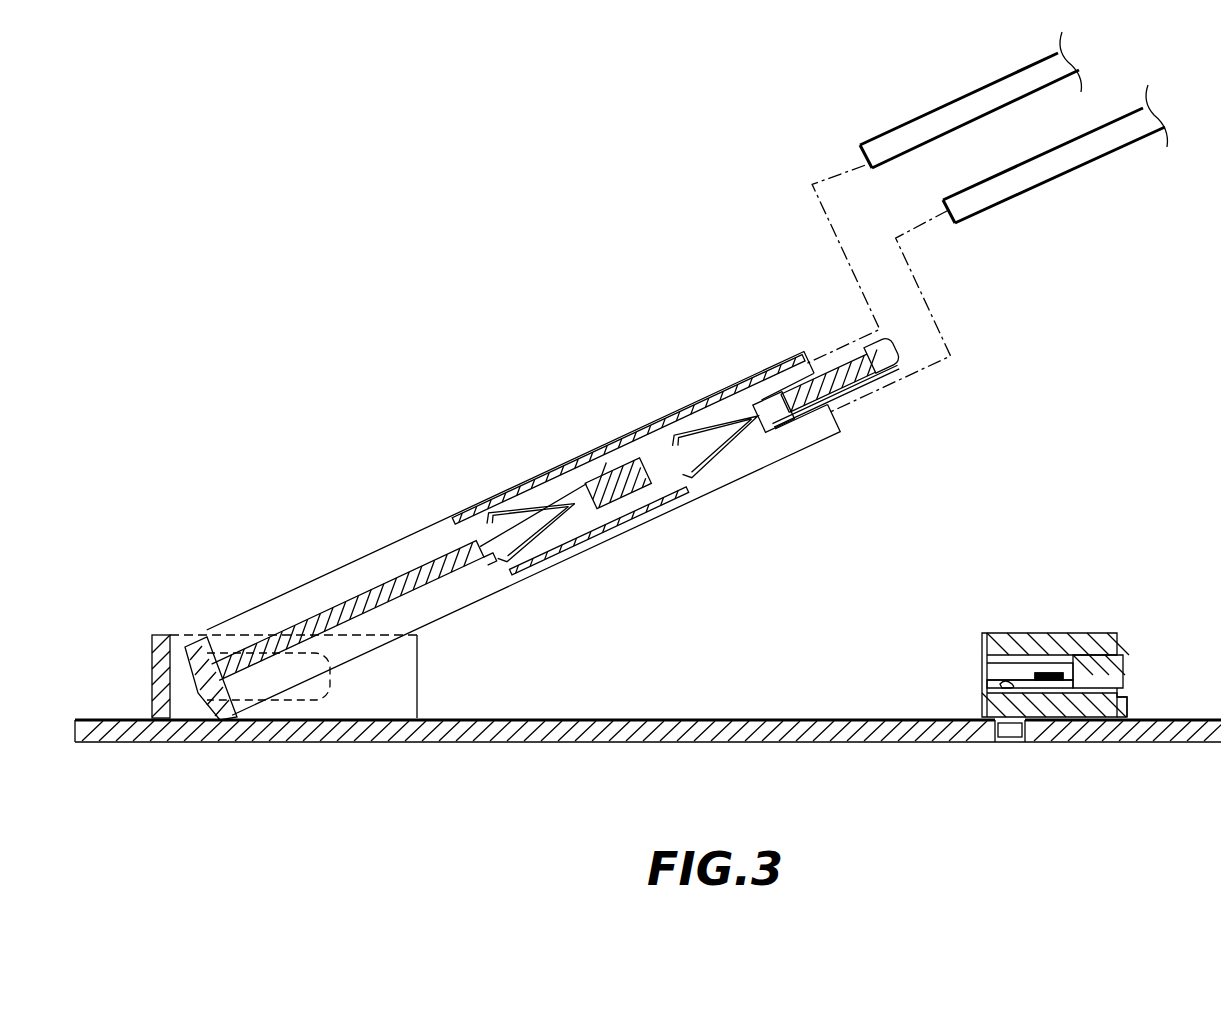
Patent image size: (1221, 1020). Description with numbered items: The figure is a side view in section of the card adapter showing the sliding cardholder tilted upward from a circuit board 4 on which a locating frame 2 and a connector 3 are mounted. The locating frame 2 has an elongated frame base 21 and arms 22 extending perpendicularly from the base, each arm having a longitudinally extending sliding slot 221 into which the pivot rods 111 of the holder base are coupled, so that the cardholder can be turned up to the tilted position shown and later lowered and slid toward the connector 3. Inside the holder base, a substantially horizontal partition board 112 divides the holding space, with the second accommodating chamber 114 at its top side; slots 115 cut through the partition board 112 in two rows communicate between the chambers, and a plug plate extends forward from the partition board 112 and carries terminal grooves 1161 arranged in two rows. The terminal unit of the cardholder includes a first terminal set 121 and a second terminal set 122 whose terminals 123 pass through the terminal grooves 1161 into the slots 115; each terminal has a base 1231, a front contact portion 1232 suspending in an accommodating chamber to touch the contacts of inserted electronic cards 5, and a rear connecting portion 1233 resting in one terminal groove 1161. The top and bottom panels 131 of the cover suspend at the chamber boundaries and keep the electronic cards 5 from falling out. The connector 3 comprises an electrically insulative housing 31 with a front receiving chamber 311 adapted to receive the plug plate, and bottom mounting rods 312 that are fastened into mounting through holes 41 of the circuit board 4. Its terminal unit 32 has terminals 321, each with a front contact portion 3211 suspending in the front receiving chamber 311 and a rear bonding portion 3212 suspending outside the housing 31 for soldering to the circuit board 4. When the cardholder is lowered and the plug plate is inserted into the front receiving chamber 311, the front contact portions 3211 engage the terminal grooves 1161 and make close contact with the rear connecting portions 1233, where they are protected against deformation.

The locating frame 2 is at (258, 669).
The elongated frame base 21 is at (157, 668).
The arms 22 is at (382, 703).
The sliding slot 221 is at (302, 695).
The pivot rods 111 is at (188, 705).
The partition board 112 is at (361, 597).
The second accommodating chamber 114 is at (289, 612).
The slots 115 is at (492, 553).
The terminal grooves 1161 is at (887, 370).
The first terminal set 121 is at (563, 540).
The second terminal set 122 is at (485, 487).
The front contact portion 1232 is at (523, 507).
The terminals 123 is at (728, 377).
The base 1231 is at (783, 403).
The rear connecting portion 1233 is at (877, 347).
The top and bottom panels 131 is at (582, 462).
The connector 3 is at (1042, 656).
The electrically insulative housing 31 is at (1092, 640).
The front receiving chamber 311 is at (988, 673).
The bottom mounting rods 312 is at (1013, 737).
The terminal unit 32 is at (1127, 677).
The terminals 321 is at (1072, 682).
The front contact portion 3211 is at (1010, 683).
The rear bonding portion 3212 is at (1118, 708).
The circuit board 4 is at (722, 735).
The mounting through holes 41 is at (1033, 740).
The electronic cards 5 is at (1037, 170).